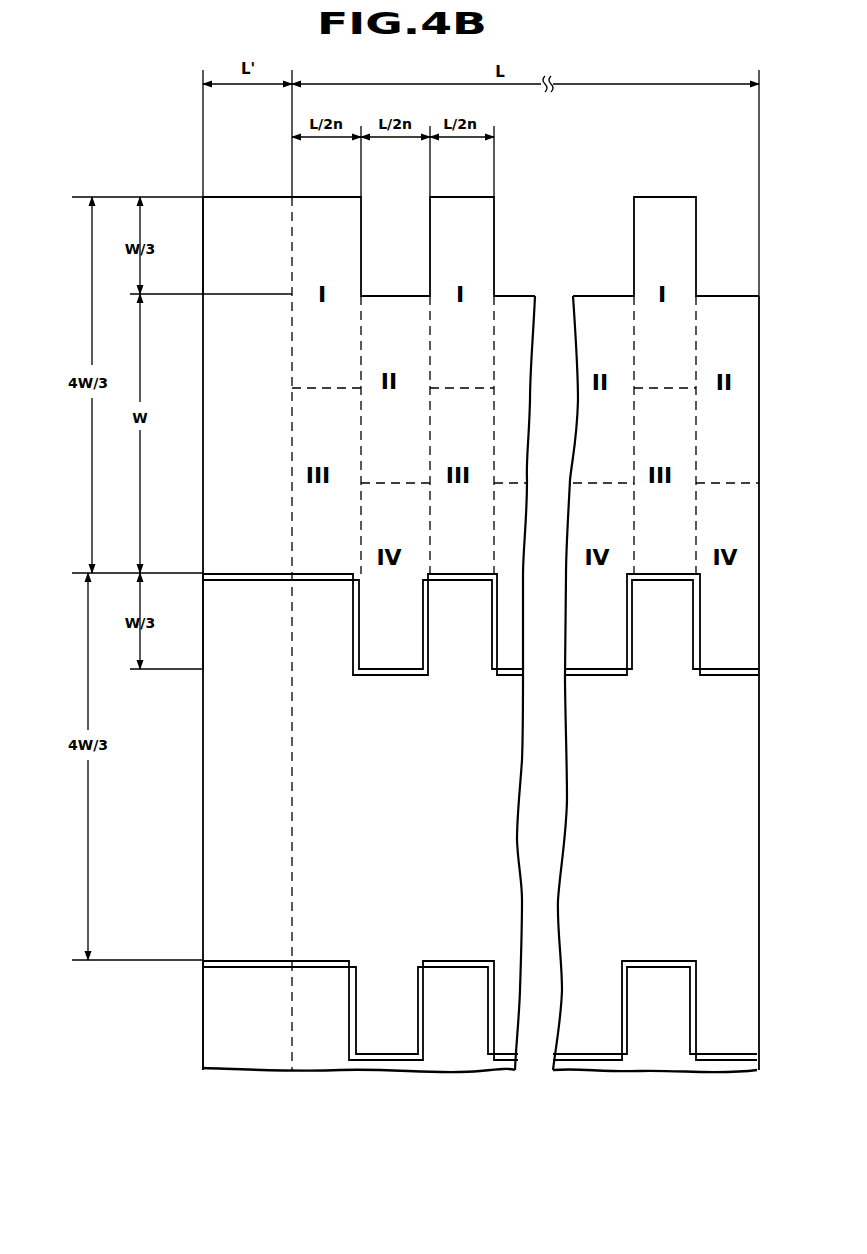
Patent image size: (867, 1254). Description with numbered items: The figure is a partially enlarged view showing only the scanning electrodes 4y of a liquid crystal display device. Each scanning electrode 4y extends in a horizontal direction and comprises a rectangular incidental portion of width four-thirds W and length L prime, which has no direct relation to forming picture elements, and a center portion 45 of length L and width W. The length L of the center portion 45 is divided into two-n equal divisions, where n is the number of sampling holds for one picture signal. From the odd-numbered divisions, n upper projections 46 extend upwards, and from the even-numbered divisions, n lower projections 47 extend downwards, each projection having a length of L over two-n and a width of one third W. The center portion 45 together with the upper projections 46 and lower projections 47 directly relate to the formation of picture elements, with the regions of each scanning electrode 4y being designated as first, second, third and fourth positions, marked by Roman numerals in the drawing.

The center portion 45 is at (305, 403).
The upper projections 46 is at (325, 207).
The lower projections 47 is at (388, 652).
The scanning electrodes 4y is at (203, 240).